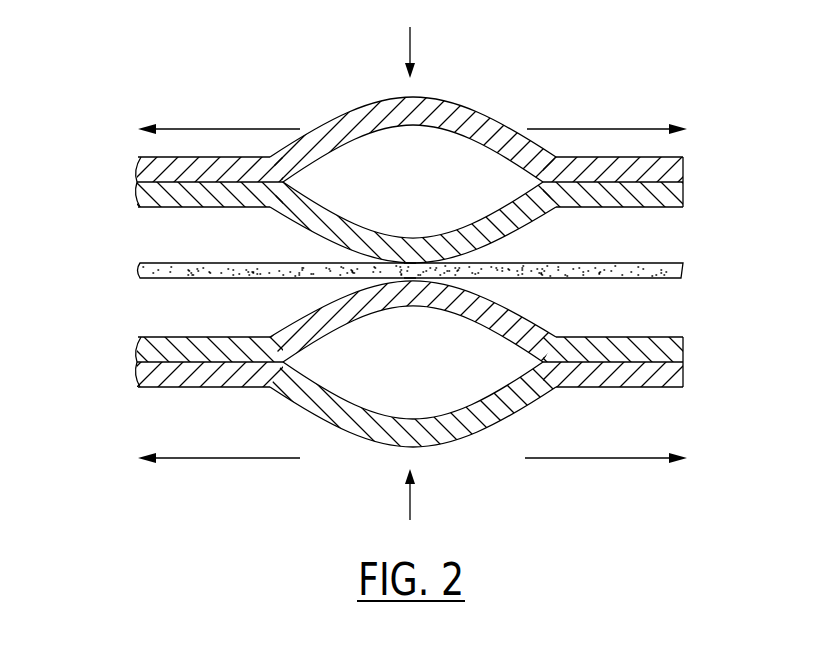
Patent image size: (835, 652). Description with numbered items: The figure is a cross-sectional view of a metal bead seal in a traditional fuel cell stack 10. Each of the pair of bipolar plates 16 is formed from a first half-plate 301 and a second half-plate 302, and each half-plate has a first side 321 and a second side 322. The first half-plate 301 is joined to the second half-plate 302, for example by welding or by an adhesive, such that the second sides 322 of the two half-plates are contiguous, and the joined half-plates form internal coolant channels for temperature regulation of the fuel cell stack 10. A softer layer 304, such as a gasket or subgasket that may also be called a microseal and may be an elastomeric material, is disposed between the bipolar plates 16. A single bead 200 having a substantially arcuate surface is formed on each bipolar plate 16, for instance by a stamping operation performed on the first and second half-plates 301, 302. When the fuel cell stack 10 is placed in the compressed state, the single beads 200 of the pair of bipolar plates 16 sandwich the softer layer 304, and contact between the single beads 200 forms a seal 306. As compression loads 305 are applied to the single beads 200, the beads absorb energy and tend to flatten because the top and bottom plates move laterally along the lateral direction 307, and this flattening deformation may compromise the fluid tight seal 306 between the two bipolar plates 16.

The fuel cell stack 10 is at (586, 92).
The bipolar plate 16 is at (138, 182).
The single bead 200 is at (325, 122).
The first half-plate 301 is at (676, 165).
The second half-plate 302 is at (676, 197).
The softer layer 304 is at (676, 272).
The compression loads 305 is at (412, 45).
The seal 306 is at (409, 290).
The lateral direction 307 is at (213, 129).
The first side 321 is at (367, 104).
The second side 322 is at (393, 127).